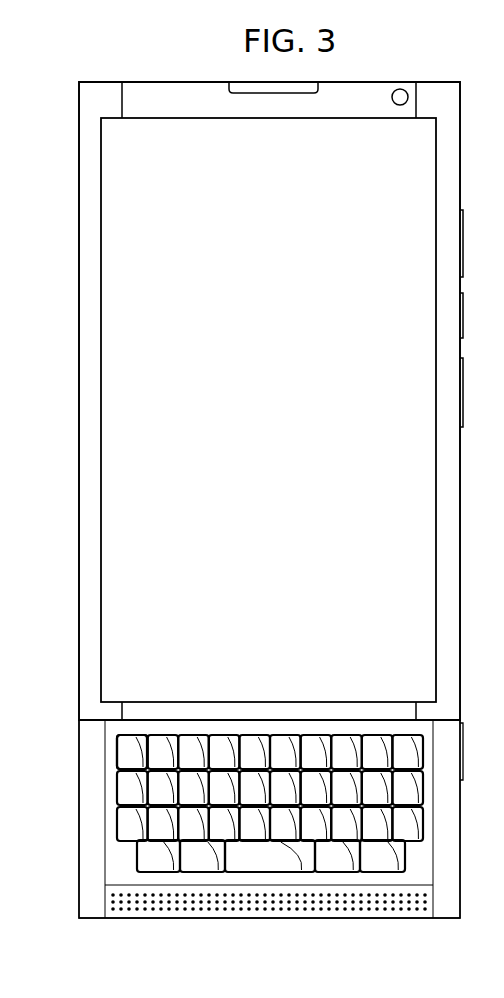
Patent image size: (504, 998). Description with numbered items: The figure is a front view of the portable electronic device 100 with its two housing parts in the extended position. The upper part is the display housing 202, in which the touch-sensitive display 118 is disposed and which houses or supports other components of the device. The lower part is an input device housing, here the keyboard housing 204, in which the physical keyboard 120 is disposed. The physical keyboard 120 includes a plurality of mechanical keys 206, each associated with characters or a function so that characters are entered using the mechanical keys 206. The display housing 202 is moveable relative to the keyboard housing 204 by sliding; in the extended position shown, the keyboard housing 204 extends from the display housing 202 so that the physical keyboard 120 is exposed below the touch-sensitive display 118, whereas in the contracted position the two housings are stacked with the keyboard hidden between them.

The electronic device 100 is at (57, 907).
The touch-sensitive display 118 is at (124, 643).
The physical keyboard 120 is at (126, 818).
The display housing 202 is at (79, 553).
The keyboard housing 204 is at (80, 851).
The mechanical keys 206 is at (126, 790).